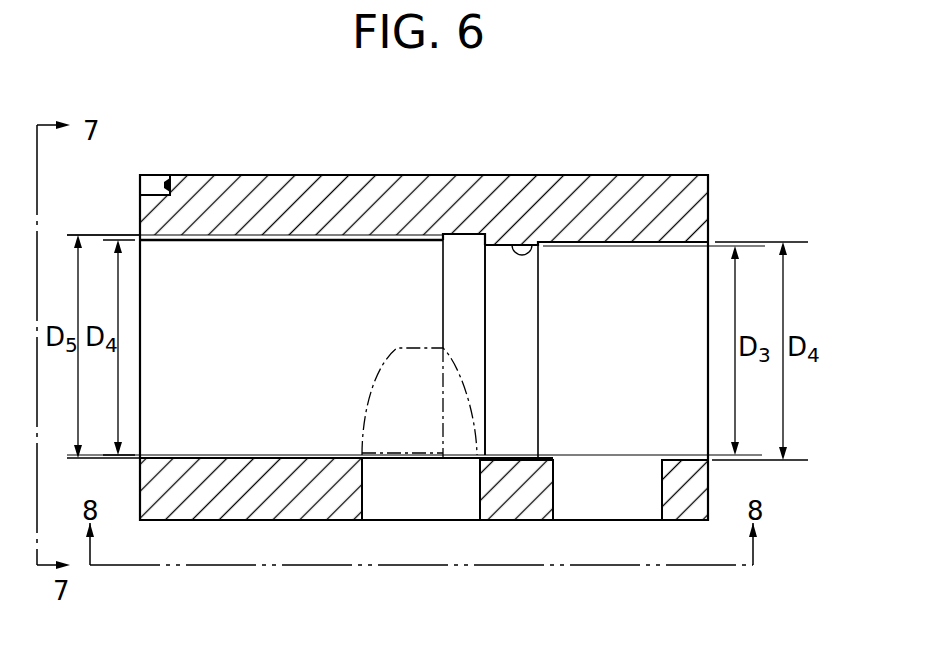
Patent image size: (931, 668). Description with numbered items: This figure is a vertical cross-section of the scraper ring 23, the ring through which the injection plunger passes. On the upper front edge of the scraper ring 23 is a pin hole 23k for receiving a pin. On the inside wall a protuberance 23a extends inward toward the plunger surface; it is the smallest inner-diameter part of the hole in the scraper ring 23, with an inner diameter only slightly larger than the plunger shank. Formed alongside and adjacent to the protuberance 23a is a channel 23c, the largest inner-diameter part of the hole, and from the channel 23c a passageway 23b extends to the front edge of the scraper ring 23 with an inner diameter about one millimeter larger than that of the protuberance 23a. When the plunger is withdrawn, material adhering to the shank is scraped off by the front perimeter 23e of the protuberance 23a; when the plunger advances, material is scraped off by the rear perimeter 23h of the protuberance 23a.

The scraper ring 23 is at (578, 107).
The pin hole 23k is at (152, 184).
The passageway 23b is at (280, 245).
The channel 23c is at (466, 250).
The protuberance 23a is at (522, 244).
The front perimeter of protuberance 23e is at (468, 258).
The rear perimeter of protuberance 23h is at (553, 257).